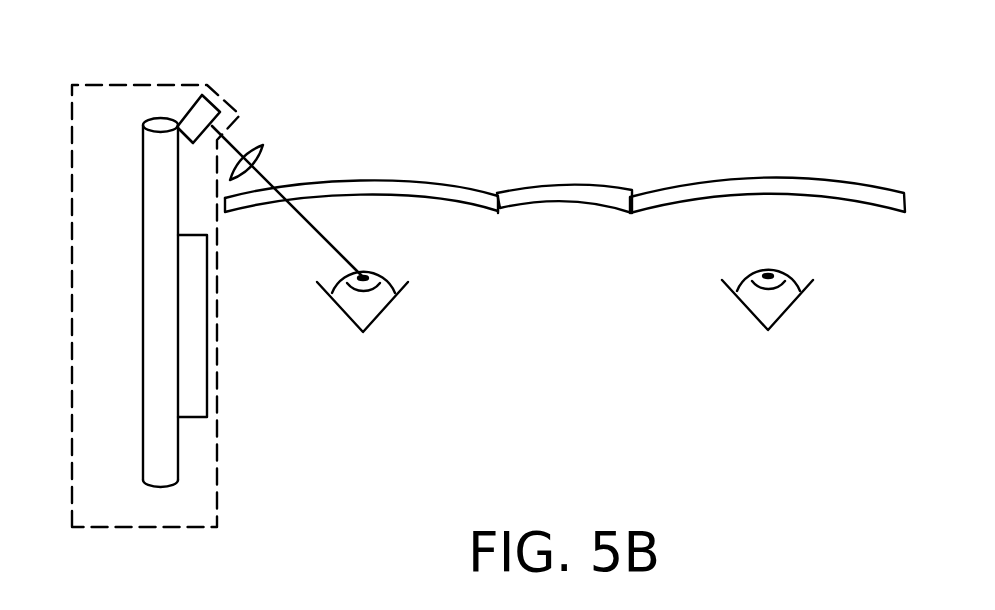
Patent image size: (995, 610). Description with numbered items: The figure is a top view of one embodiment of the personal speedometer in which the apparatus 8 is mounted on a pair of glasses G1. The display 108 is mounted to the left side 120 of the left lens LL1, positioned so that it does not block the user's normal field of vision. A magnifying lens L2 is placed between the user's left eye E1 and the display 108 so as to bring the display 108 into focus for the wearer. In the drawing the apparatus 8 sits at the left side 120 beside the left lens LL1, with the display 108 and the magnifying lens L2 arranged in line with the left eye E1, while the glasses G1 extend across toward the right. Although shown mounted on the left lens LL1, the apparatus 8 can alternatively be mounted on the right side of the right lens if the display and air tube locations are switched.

The apparatus 8 is at (72, 362).
The display 108 is at (201, 95).
The magnifying lens L2 is at (257, 148).
The left lens LL1 is at (403, 185).
The left side 120 is at (232, 214).
The glasses G1 is at (572, 185).
The left eye E1 is at (380, 315).